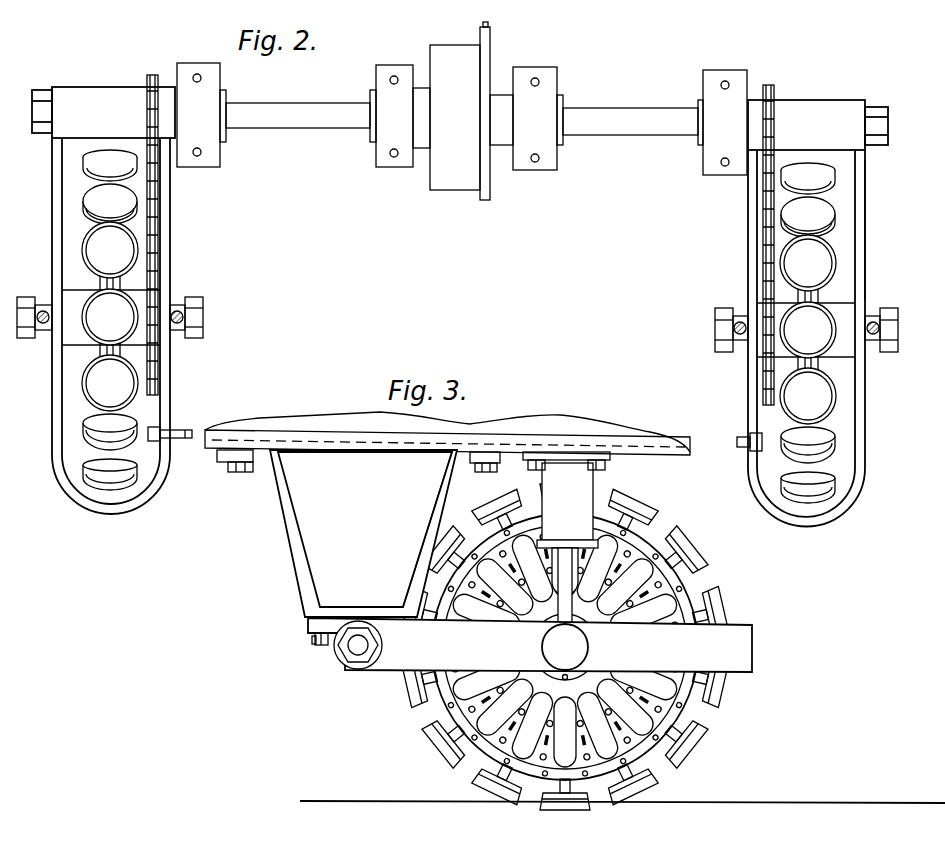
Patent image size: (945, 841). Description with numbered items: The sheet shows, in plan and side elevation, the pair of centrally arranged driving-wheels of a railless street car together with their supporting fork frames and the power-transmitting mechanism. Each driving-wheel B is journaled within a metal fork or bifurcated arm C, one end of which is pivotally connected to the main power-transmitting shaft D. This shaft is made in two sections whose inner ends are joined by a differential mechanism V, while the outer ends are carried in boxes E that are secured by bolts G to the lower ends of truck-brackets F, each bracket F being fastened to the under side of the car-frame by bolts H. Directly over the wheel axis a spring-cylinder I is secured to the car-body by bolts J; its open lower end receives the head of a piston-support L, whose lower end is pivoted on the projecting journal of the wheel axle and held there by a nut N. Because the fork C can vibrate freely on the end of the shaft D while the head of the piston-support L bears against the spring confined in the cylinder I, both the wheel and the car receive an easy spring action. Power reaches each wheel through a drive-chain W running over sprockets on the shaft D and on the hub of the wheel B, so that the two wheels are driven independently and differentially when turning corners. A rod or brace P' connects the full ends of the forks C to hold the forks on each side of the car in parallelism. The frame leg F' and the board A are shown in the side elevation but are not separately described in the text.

In FIG. 3, the platform board A is at (447, 423).
In FIG. 2, the driving-wheel B is at (458, 335).
In FIG. 3, the driving-wheel B is at (572, 647).
In FIG. 2, the fork C is at (55, 240).
In FIG. 3, the fork C is at (530, 645).
In FIG. 2, the main power-transmitting shaft D is at (333, 128).
In FIG. 3, the main power-transmitting shaft D is at (362, 645).
In FIG. 2, the box E is at (217, 82).
In FIG. 3, the box E is at (308, 628).
In FIG. 2, the truck-bracket F is at (875, 230).
In FIG. 3, the truck-bracket F is at (363, 533).
In FIG. 3, the frame leg F' is at (413, 529).
In FIG. 3, the bolt G is at (313, 644).
In FIG. 3, the bolt H is at (358, 474).
In FIG. 3, the spring-cylinder I is at (567, 505).
In FIG. 3, the bolt J is at (534, 470).
In FIG. 2, the piston-support L is at (45, 323).
In FIG. 3, the piston-support L is at (563, 563).
In FIG. 2, the nut N is at (203, 318).
In FIG. 2, the rod or brace P' is at (455, 426).
In FIG. 2, the differential mechanism V is at (460, 111).
In FIG. 2, the drive-chain W is at (160, 197).